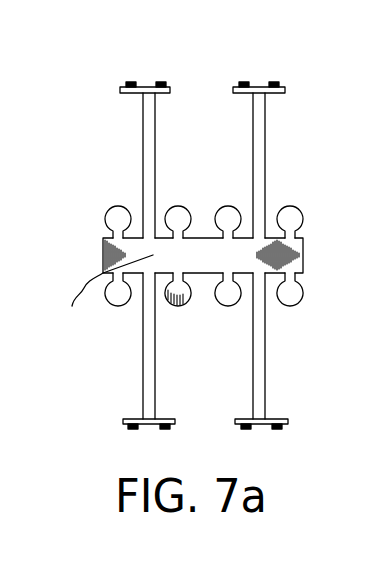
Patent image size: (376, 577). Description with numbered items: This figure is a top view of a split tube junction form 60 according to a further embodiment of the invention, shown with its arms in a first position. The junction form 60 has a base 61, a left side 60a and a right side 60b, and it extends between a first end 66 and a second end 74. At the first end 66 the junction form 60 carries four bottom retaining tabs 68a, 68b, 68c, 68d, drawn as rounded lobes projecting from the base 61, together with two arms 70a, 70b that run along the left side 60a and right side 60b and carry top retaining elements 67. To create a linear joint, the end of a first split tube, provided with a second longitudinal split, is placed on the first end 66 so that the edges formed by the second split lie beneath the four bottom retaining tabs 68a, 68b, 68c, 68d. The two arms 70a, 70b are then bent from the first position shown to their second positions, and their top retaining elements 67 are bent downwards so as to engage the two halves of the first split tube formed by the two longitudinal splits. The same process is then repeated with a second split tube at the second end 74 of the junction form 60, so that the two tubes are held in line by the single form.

The junction form 60 is at (276, 189).
The left side 60a is at (204, 404).
The right side 60b is at (190, 98).
The base 61 is at (101, 295).
The first end 66 is at (92, 246).
The top retaining elements 67 is at (131, 428).
The bottom retaining tab 68a is at (126, 209).
The bottom retaining tab 68b is at (178, 207).
The bottom retaining tab 68c is at (111, 303).
The bottom retaining tab 68d is at (189, 290).
The arm 70a is at (142, 118).
The arm 70b is at (143, 365).
The second end 74 is at (318, 248).